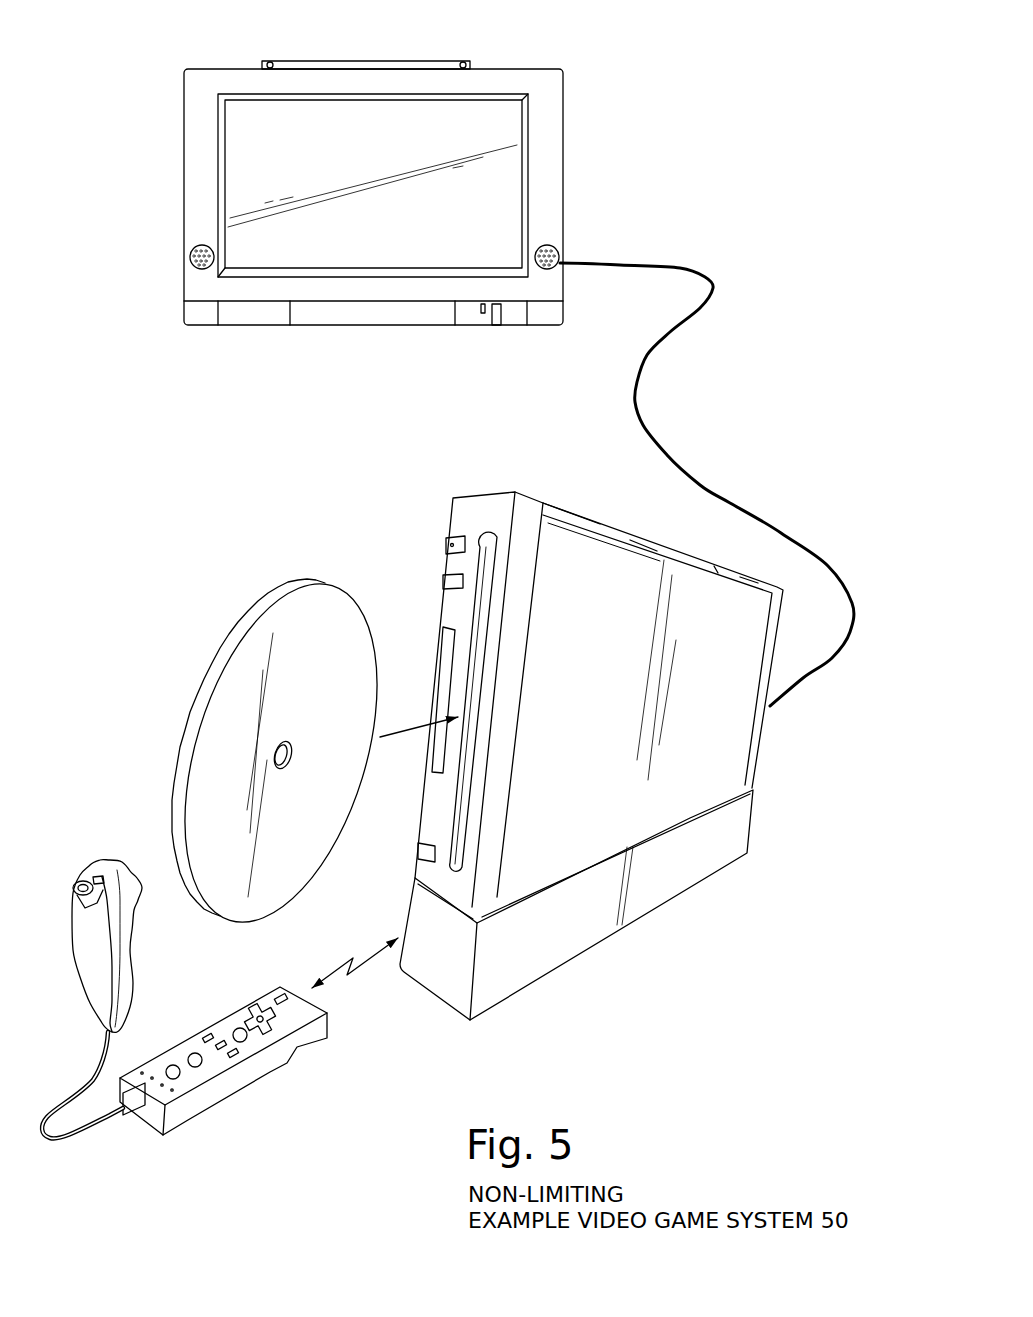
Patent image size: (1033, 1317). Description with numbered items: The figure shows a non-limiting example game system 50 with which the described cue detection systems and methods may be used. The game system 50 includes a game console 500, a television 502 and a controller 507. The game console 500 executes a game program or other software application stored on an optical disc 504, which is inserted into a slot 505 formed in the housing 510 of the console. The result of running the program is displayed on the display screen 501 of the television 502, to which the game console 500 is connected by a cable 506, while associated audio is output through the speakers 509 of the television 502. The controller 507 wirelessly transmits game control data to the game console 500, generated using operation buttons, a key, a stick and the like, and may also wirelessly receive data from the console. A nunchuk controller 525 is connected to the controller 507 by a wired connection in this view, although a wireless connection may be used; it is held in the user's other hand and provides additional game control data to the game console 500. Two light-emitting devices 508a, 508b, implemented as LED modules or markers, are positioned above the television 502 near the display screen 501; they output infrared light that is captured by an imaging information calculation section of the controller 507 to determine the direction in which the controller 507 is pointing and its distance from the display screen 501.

The game system 50 is at (250, 452).
The game console 500 is at (769, 748).
The display screen 501 is at (260, 145).
The television 502 is at (574, 161).
The optical disc 504 is at (185, 753).
The slot 505 is at (488, 546).
The cable 506 is at (686, 467).
The controller 507 is at (337, 1060).
The light-emitting device 508a is at (275, 63).
The light-emitting device 508b is at (470, 62).
The speakers 509 is at (190, 267).
The housing 510 is at (613, 525).
The nunchuk controller 525 is at (118, 968).